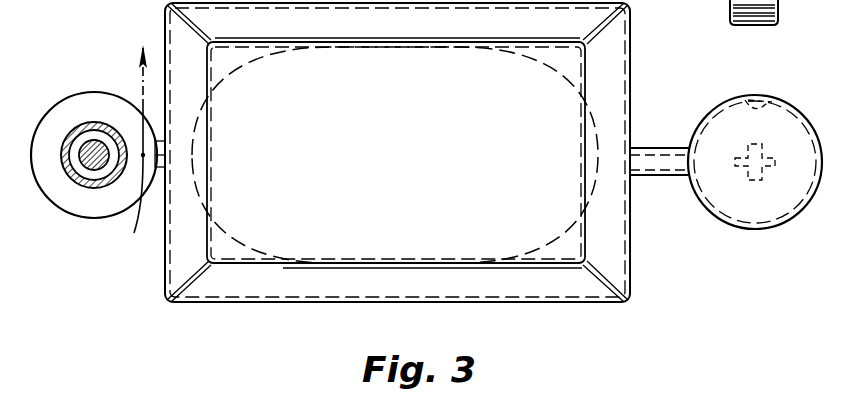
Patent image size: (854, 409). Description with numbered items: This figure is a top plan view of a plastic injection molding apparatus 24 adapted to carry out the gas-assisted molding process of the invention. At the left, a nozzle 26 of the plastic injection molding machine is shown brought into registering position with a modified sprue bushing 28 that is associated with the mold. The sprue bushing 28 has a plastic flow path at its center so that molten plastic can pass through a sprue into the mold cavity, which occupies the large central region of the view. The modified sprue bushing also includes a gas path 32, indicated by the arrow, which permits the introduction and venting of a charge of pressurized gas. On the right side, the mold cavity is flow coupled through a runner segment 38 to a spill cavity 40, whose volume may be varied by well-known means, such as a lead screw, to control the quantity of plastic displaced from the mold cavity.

The plastic injection molding apparatus 24 is at (655, 275).
The nozzle 26 is at (80, 118).
The sprue bushing 28 is at (113, 92).
The gas path 32 is at (129, 156).
The runner segment 38 is at (640, 150).
The spill cavity 40 is at (777, 95).